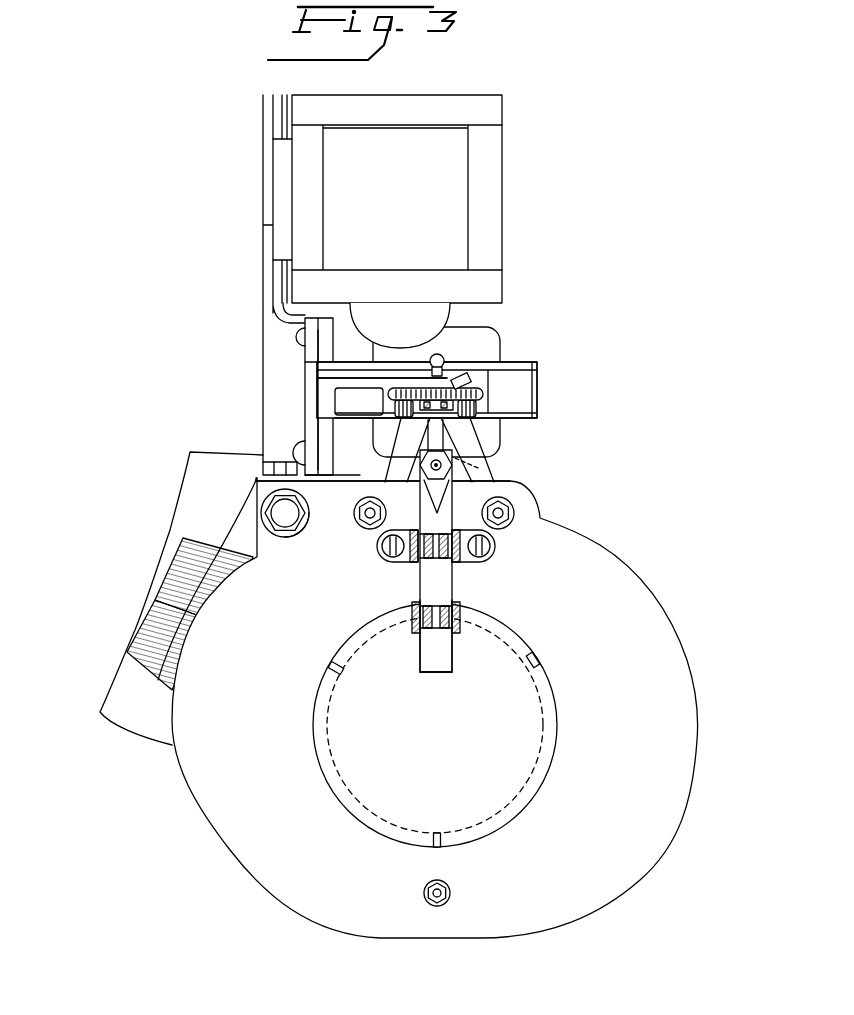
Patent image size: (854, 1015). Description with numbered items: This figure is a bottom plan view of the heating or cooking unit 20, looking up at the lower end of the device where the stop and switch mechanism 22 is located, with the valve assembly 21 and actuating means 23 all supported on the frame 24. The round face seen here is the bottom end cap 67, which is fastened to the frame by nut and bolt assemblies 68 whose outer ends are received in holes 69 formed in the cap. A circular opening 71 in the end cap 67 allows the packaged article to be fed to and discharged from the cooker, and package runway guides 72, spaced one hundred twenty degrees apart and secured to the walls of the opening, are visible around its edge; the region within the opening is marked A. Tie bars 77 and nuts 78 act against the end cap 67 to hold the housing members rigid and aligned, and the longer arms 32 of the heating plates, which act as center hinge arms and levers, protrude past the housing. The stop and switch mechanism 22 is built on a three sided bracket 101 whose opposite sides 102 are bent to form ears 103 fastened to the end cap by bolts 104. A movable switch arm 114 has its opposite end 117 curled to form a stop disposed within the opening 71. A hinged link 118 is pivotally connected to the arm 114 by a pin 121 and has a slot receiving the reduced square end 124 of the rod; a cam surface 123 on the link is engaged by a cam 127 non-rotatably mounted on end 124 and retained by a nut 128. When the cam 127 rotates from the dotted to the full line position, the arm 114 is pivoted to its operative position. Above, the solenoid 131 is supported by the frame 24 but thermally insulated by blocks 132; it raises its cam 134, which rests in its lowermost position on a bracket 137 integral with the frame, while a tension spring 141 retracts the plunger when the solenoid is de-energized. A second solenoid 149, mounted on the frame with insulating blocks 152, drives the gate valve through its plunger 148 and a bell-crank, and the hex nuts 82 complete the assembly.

The heating or cooking unit 20 is at (187, 882).
The valve assembly 21 is at (112, 713).
The stop and switch mechanism 22 is at (372, 583).
The actuating means 23 is at (509, 346).
The frame 24 is at (260, 262).
The longer arms 32 is at (400, 460).
The end caps 67 is at (681, 774).
The nut and bolt assemblies 68 is at (285, 530).
The holes 69 is at (309, 522).
The circular openings 71 is at (554, 741).
The package runway guides 72 is at (340, 672).
The tie bars 77 is at (425, 897).
The nuts 78 is at (450, 892).
The hex nuts 82 is at (368, 527).
The three sided bracket 101 is at (478, 564).
The opposite sides 102 is at (412, 532).
The ears 103 is at (383, 558).
The bolts 104 is at (407, 564).
The movable switch arm 114 is at (455, 646).
The opposite end of arm 117 is at (438, 676).
The hinged link 118 is at (450, 572).
The pin 121 is at (425, 630).
The cam surface 123 is at (441, 490).
The reduced square end of rod 124 is at (460, 460).
The cam 127 is at (460, 468).
The nut 128 is at (443, 453).
The solenoid 131 is at (528, 380).
The blocks 132 is at (387, 458).
The cam 134 is at (483, 392).
The bracket 137 is at (368, 375).
The tension spring 141 is at (441, 356).
The plunger 148 is at (429, 325).
The solenoid 149 is at (492, 199).
The blocks 152 is at (281, 113).
The opening area A is at (522, 785).